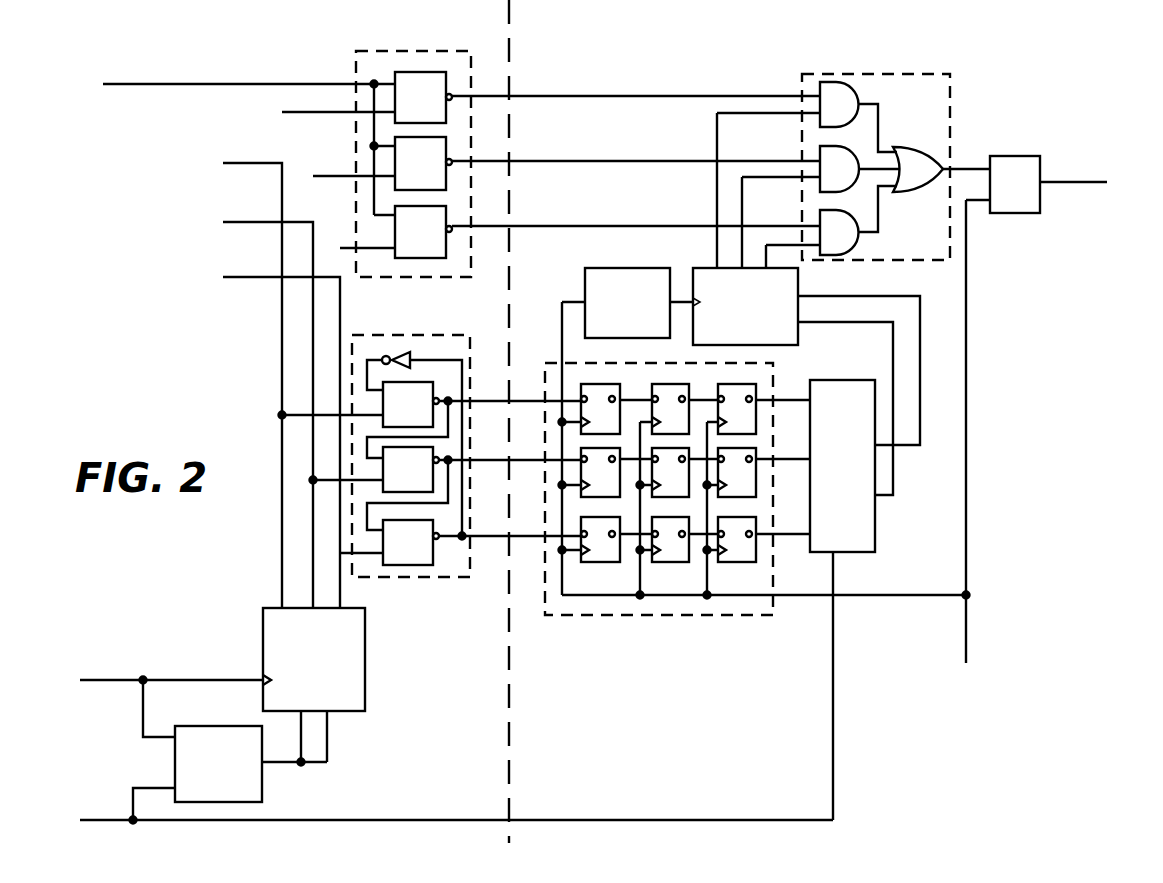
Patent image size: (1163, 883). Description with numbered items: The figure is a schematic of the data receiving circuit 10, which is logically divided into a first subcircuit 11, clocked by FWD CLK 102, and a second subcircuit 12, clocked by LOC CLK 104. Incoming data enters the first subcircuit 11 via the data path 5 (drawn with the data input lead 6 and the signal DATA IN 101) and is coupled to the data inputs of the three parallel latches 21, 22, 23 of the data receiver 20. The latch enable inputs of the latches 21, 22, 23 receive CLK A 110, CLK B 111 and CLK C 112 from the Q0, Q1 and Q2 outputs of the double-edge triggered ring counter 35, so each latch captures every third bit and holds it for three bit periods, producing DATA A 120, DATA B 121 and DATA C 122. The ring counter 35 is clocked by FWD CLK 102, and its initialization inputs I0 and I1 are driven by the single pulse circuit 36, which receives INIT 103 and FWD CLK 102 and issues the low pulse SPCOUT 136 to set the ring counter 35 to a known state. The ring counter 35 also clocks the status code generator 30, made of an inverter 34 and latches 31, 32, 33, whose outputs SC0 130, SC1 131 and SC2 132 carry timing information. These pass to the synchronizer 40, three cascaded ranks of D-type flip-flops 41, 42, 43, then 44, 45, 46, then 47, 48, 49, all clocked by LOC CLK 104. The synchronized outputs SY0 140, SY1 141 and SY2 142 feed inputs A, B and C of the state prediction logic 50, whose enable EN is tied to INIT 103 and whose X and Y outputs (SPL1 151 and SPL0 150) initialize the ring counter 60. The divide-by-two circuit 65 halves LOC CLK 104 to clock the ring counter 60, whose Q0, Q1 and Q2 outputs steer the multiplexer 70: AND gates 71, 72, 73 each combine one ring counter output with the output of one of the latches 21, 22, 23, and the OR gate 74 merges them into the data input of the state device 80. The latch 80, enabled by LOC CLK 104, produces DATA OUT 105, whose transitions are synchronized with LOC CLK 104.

The data path 5 is at (204, 87).
The forward clock input 6 is at (101, 687).
The data receiving circuit 10 is at (212, 369).
The first subcircuit 11 is at (493, 770).
The second subcircuit 12 is at (546, 770).
The data receiver 20 is at (358, 50).
The latch A 21 is at (423, 97).
The latch B 22 is at (423, 163).
The latch C 23 is at (423, 232).
The status code generator 30 is at (356, 335).
The latch 31 is at (359, 404).
The latch 32 is at (375, 469).
The latch 33 is at (389, 542).
The inverter 34 is at (416, 439).
The ring counter 35 is at (314, 685).
The single pulse circuit 36 is at (218, 764).
The synchronizer 40 is at (578, 616).
The D-type flip-flop 41 is at (591, 409).
The D-type flip-flop 42 is at (591, 472).
The D-type flip-flop 43 is at (591, 539).
The D-type flip-flop 44 is at (654, 409).
The D-type flip-flop 45 is at (654, 472).
The D-type flip-flop 46 is at (654, 539).
The D-type flip-flop 47 is at (722, 409).
The D-type flip-flop 48 is at (722, 472).
The D-type flip-flop 49 is at (722, 539).
The state prediction logic 50 is at (885, 600).
The ring counter 60 is at (756, 229).
The divide-by-2 circuit 65 is at (631, 431).
The multiplexer 70 is at (820, 73).
The AND gate 71 is at (858, 117).
The AND gate 72 is at (859, 169).
The AND gate 73 is at (858, 220).
The OR gate 74 is at (941, 169).
The state device 80 is at (1030, 156).
The data in signal 101 is at (249, 140).
The FWD CLK 102 is at (161, 699).
The INIT 103 is at (444, 806).
The LOC CLK 104 is at (787, 640).
The DATA OUT 105 is at (1084, 183).
The CLK A 110 is at (270, 360).
The CLK B 111 is at (270, 392).
The CLK C 112 is at (270, 428).
The DATA A 120 is at (636, 88).
The DATA B 121 is at (636, 153).
The DATA C 122 is at (636, 217).
The SC0 130 is at (474, 422).
The SC1 131 is at (474, 487).
The SC2 132 is at (510, 528).
The SPCOUT 136 is at (342, 763).
The SY0 140 is at (783, 399).
The SY1 141 is at (783, 459).
The SY2 142 is at (783, 534).
The state prediction signal SPL0 150 is at (848, 401).
The state prediction signal SPL1 151 is at (859, 362).